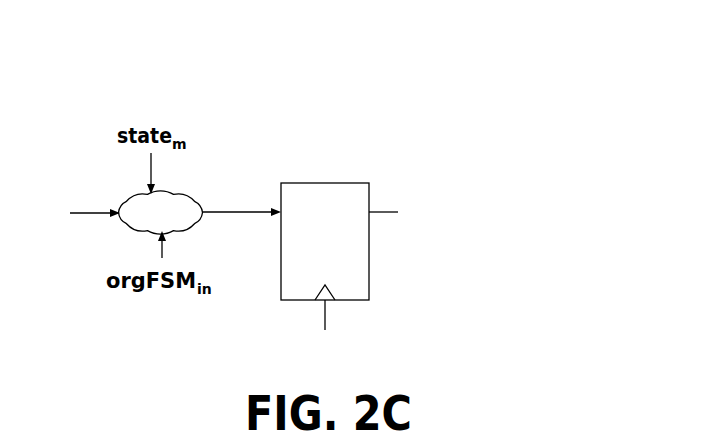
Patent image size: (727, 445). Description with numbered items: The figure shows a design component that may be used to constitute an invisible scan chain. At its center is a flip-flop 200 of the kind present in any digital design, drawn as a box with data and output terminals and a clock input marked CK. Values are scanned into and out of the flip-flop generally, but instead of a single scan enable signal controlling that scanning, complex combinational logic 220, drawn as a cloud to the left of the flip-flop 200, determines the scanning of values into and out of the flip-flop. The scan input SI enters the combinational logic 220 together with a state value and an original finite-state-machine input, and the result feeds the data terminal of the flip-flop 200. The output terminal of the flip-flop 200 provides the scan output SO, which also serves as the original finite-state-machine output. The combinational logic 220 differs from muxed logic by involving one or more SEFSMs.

The complex combinational logic 220 is at (243, 122).
The flip-flop 200 is at (378, 228).
The scan input SI is at (78, 213).
The clock input CK is at (325, 297).
The scan output / orgFSM_out SO is at (446, 209).